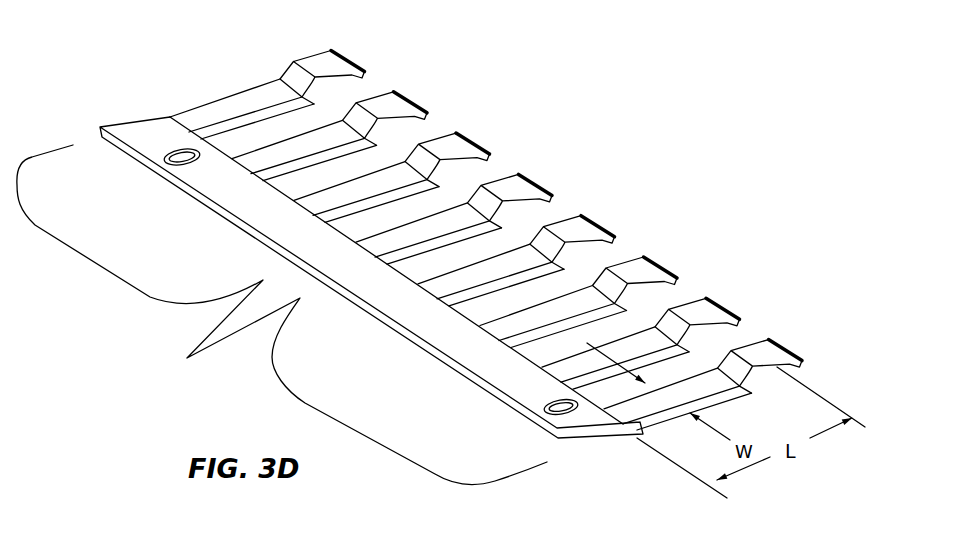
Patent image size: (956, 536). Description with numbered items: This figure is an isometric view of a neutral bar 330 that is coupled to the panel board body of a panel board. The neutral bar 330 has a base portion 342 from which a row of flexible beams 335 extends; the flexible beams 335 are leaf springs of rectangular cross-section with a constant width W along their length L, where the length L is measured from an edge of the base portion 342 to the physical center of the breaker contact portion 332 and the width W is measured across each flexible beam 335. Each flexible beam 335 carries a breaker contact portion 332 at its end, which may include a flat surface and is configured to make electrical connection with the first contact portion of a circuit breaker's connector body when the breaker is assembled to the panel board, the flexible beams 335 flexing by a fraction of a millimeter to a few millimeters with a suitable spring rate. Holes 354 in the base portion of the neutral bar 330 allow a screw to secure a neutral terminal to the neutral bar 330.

The neutral bar 330 is at (138, 116).
The breaker contact portion 332 is at (325, 62).
The flexible beam 335 is at (278, 152).
The base portion 342 is at (282, 315).
The holes 354 is at (172, 163).